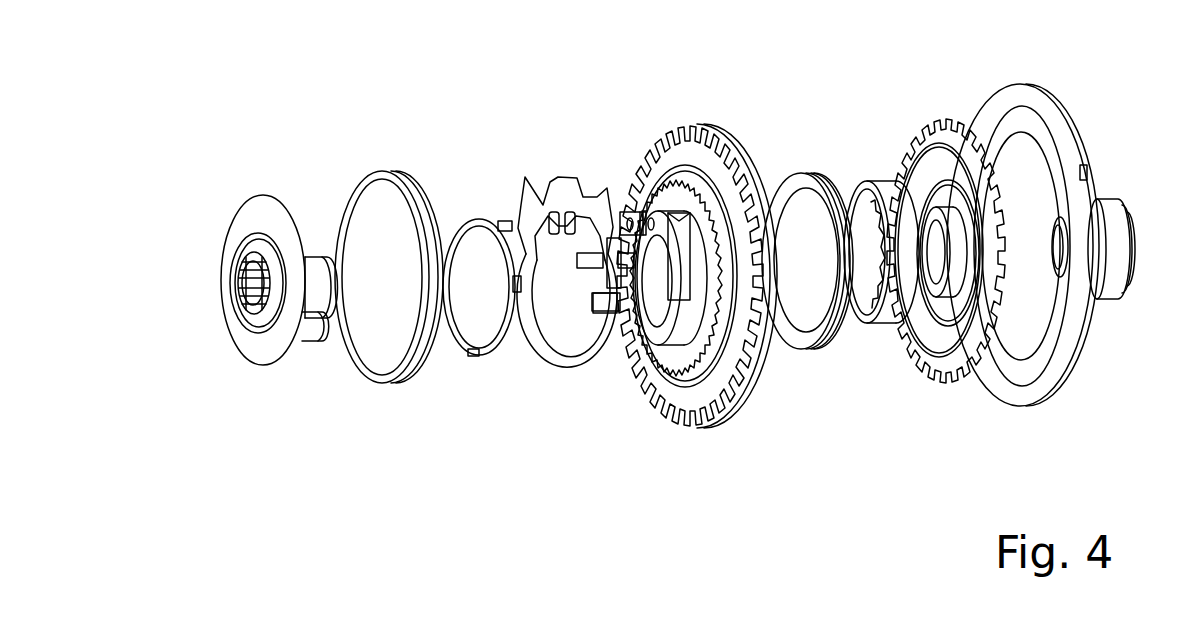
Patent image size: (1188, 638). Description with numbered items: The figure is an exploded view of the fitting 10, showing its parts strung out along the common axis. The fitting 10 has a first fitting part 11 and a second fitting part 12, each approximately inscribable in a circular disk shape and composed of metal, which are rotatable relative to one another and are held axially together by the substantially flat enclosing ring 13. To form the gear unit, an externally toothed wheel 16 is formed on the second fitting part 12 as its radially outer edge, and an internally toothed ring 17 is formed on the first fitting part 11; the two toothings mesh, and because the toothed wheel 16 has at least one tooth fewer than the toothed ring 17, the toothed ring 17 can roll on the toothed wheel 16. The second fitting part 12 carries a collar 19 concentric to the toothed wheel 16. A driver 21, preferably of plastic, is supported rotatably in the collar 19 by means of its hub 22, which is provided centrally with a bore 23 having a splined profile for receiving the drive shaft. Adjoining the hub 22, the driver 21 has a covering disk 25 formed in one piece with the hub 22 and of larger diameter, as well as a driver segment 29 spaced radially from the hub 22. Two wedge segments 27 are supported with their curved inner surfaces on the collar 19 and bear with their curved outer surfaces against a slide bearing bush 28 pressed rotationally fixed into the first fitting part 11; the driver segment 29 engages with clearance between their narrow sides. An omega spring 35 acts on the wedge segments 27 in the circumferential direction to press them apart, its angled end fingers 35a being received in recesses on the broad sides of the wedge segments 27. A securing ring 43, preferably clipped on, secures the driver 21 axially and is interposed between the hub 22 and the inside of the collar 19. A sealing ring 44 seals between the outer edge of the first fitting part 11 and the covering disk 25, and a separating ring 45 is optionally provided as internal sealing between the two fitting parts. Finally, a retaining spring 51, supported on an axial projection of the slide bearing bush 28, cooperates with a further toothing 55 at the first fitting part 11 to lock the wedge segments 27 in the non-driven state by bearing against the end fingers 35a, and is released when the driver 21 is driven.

The fitting 10 is at (478, 89).
The first fitting part 11 is at (701, 445).
The second fitting part 12 is at (944, 392).
The enclosing ring 13 is at (998, 422).
The externally toothed wheel 16 is at (905, 134).
The internally toothed ring 17 is at (676, 120).
The collar 19 is at (947, 278).
The driver 21 is at (268, 382).
The hub 22 is at (326, 257).
The bore 23 is at (240, 288).
The covering disk 25 is at (262, 198).
The wedge segments 27 is at (632, 335).
The slide bearing bush 28 is at (870, 324).
The driver segment 29 is at (307, 345).
The omega spring 35 is at (482, 357).
The end fingers 35a is at (510, 224).
The securing ring 43 is at (1100, 296).
The sealing ring 44 is at (391, 388).
The separating ring 45 is at (800, 351).
The retaining spring 51 is at (566, 366).
The toothing 55 is at (654, 190).